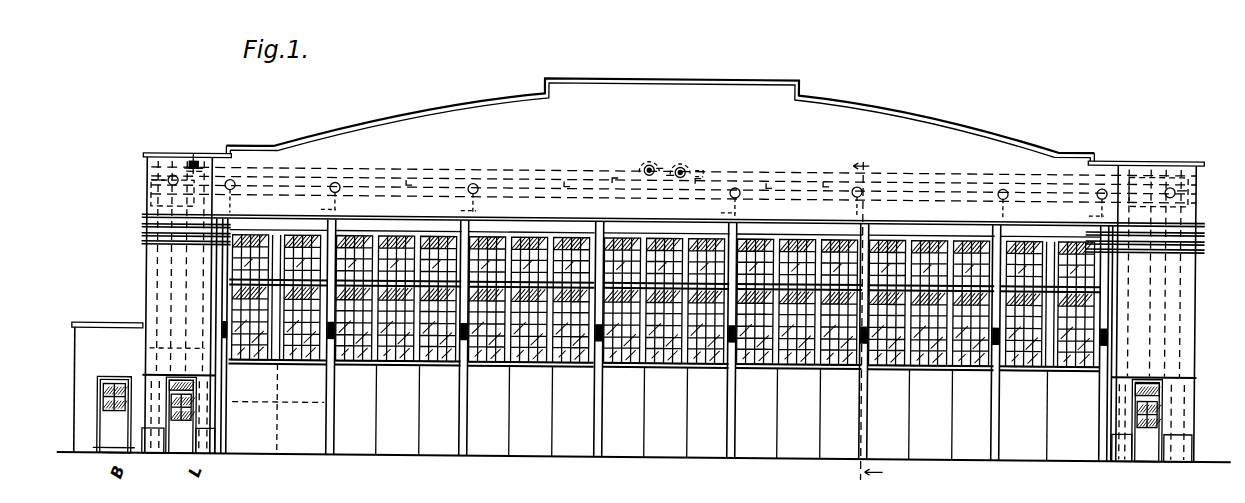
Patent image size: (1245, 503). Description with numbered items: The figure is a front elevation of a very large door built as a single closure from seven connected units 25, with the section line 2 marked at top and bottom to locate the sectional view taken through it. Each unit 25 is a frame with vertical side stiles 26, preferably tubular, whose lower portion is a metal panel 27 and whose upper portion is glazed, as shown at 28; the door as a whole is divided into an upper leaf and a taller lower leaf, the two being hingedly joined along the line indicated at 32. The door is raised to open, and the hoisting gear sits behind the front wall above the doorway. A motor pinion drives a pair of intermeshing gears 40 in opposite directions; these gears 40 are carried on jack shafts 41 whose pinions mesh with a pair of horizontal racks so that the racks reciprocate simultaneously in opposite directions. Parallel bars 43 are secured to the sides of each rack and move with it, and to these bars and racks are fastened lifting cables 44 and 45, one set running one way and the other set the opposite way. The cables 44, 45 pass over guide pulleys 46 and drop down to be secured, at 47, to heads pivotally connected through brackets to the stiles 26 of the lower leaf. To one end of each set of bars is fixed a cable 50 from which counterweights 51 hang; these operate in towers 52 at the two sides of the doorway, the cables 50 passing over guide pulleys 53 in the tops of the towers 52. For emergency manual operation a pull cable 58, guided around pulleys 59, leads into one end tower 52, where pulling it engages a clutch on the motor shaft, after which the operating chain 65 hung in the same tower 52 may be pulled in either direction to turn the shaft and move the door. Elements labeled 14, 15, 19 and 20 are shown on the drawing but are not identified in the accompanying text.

The section line 2- 2 is at (867, 319).
The window sash 14 is at (265, 336).
The end door section 15 is at (258, 388).
The latch 19 is at (868, 330).
The door panel 20 is at (1073, 366).
The door unit 25 is at (640, 412).
The vertical side stile 26 is at (466, 391).
The metal panel 27 is at (300, 450).
The glazed upper portion 28 is at (762, 234).
The hinge connection 32 is at (297, 268).
The intermeshing gear 40 is at (677, 165).
The jack shaft 41 is at (641, 167).
The parallel bar 43 is at (426, 172).
The lifting cable 44 is at (1070, 210).
The lifting cable 45 is at (1015, 209).
The guide pulley 46 is at (337, 185).
The cable securing point 47 is at (470, 334).
The counterweight cable 50 is at (150, 196).
The counterweight 51 is at (150, 274).
The tower 52 is at (150, 302).
The guide pulley 53 is at (152, 184).
The pull cable 58 is at (268, 148).
The pulley 59 is at (192, 164).
The operating chain 65 is at (150, 351).